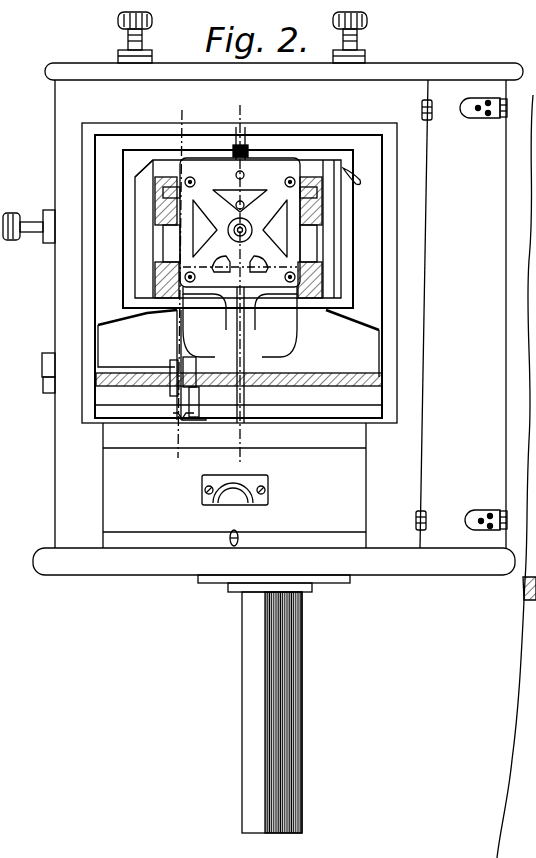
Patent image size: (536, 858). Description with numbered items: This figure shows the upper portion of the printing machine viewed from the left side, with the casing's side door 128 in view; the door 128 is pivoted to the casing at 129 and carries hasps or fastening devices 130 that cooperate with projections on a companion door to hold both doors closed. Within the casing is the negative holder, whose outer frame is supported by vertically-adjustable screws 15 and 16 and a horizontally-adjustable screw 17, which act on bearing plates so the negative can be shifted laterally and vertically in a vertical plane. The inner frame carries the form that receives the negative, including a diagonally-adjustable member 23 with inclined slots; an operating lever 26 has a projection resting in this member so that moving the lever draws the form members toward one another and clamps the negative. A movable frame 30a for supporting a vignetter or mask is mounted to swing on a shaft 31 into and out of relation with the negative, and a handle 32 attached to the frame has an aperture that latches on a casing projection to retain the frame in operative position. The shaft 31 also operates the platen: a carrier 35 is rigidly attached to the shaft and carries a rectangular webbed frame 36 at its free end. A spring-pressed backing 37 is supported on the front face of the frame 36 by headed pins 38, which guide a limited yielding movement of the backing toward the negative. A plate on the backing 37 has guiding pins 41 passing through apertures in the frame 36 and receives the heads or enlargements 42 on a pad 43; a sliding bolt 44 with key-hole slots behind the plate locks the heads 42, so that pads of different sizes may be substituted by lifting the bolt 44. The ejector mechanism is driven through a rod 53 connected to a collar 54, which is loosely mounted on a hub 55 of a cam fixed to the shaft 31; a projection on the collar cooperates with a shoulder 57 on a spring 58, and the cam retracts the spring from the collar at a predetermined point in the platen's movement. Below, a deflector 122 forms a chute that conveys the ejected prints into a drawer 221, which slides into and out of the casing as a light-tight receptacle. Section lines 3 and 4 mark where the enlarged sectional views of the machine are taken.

The section line 3— 3 is at (175, 282).
The section line 4— 4 is at (237, 281).
The vertically-adjustable screw 15 is at (129, 48).
The vertically-adjustable screw 16 is at (357, 46).
The horizontally-adjustable screw 17 is at (44, 242).
The diagonally-adjustable member 23 is at (345, 204).
The operating lever 26 is at (350, 173).
The movable frame 30a is at (390, 316).
The shaft 31 is at (318, 375).
The handle 32 is at (248, 148).
The carrier 35 is at (268, 312).
The rectangular webbed frame 36 is at (240, 222).
The spring-pressed backing 37 is at (282, 163).
The headed pins 38 is at (291, 283).
The guiding pins 41 is at (244, 177).
The heads 42 is at (238, 206).
The pad 43 is at (305, 229).
The sliding bolt 44 is at (280, 140).
The rod 53 is at (180, 322).
The collar 54 is at (186, 360).
The hub 55 is at (196, 360).
The shoulder 57 is at (199, 389).
The spring 58 is at (178, 410).
The deflector 122 is at (134, 345).
The door 128 is at (462, 245).
The pivot 129 is at (416, 520).
The hasps 130 is at (494, 120).
The drawer 221 is at (266, 490).